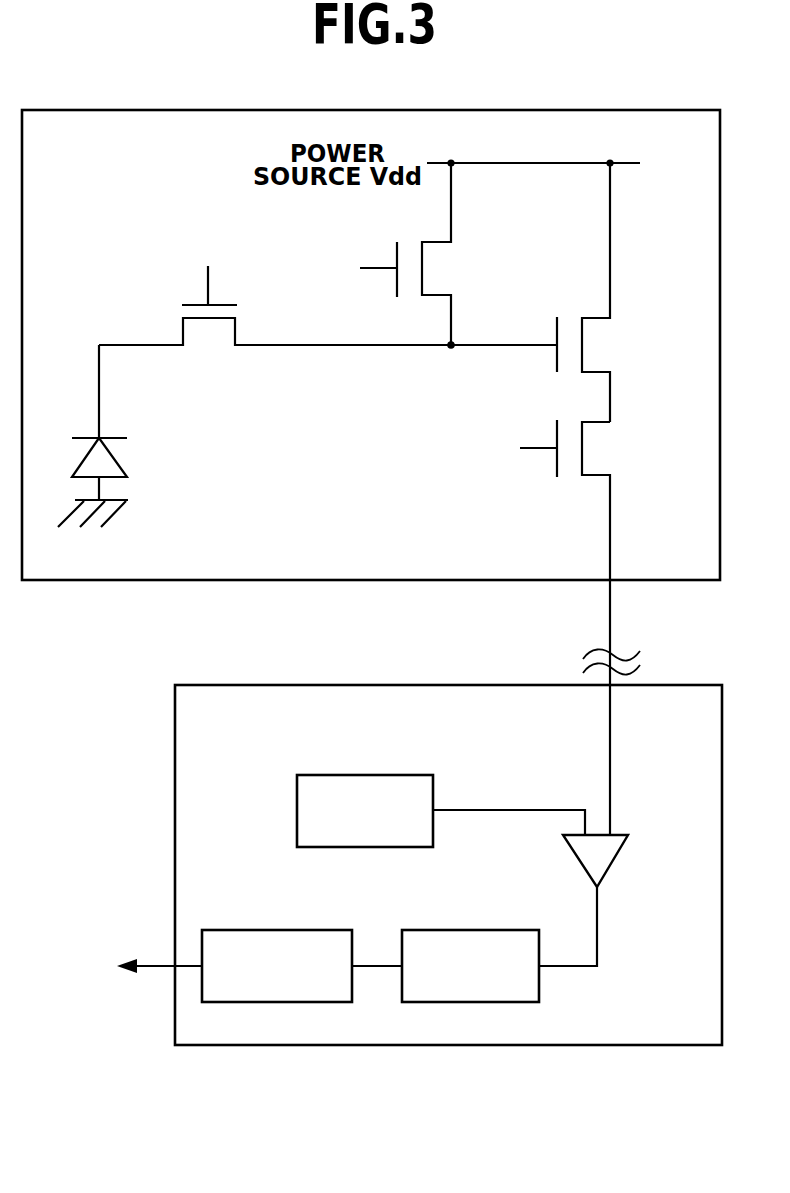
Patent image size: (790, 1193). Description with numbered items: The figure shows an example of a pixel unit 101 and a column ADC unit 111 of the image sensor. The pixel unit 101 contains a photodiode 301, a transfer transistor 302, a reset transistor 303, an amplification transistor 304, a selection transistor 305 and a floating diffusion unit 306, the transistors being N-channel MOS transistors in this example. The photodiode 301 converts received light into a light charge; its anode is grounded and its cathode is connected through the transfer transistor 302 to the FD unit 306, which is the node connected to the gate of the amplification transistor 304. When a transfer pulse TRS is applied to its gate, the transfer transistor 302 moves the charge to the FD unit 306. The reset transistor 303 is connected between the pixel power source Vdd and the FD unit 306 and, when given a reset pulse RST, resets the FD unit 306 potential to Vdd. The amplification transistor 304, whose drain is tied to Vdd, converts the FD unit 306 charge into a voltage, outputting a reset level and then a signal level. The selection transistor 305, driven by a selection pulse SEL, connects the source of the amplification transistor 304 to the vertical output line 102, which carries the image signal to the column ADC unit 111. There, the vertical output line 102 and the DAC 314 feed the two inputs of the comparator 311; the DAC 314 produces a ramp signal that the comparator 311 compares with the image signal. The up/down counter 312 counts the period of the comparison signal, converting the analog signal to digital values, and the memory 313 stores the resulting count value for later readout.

The pixel unit 101 is at (599, 110).
The vertical output line 102 is at (613, 613).
The column ADC unit 111 is at (456, 685).
The photodiode 301 is at (117, 452).
The transfer transistor 302 is at (209, 340).
The reset transistor 303 is at (447, 267).
The amplification transistor 304 is at (611, 345).
The selection transistor 305 is at (611, 450).
The floating diffusion unit 306 is at (452, 349).
The comparator 311 is at (610, 866).
The up/down counter 312 is at (472, 930).
The memory 313 is at (278, 928).
The digital-analog converter 314 is at (296, 811).